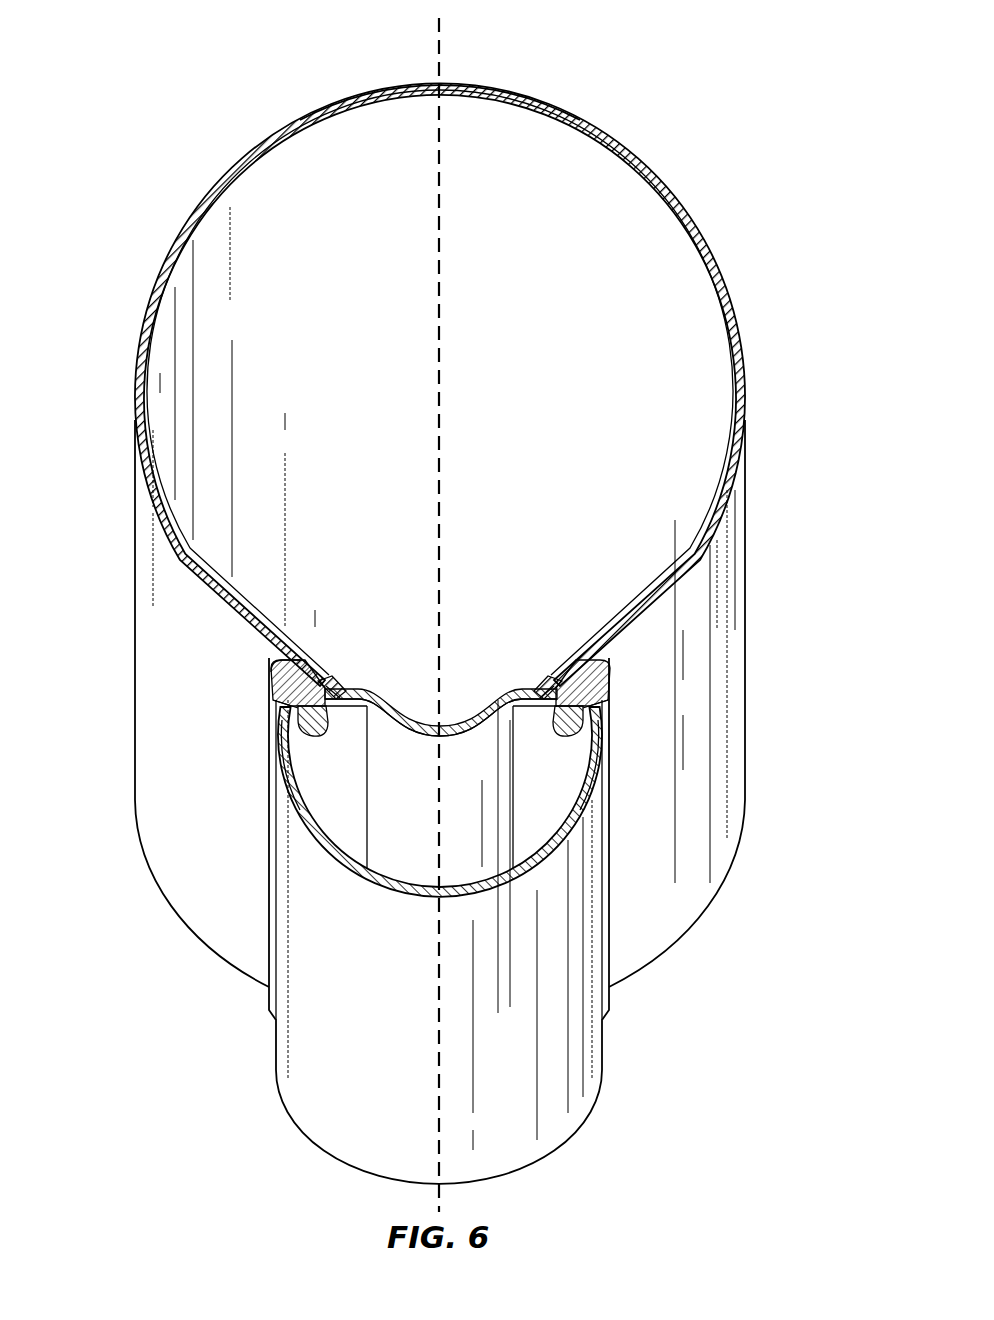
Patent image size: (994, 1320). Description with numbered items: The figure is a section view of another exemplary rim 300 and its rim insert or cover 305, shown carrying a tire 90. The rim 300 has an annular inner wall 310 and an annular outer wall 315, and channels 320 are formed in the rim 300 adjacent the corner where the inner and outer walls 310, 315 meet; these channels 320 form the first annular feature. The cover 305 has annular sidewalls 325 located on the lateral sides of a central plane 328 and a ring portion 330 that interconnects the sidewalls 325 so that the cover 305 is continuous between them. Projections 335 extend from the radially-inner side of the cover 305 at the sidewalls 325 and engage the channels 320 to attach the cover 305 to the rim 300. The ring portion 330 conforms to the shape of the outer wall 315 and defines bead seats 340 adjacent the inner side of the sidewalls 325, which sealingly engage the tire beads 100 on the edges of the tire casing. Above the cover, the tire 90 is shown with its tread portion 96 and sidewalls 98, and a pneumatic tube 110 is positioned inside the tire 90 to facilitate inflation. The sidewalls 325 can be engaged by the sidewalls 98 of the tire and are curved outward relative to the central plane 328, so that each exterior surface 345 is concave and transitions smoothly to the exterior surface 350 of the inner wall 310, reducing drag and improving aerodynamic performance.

The tire 90 is at (628, 148).
The tread portion 96 is at (525, 97).
The sidewalls 98 is at (143, 617).
The tire beads 100 is at (332, 687).
The pneumatic tube 110 is at (667, 578).
The rim 300 is at (582, 1113).
The cover 305 is at (268, 668).
The annular inner wall 310 is at (377, 882).
The annular outer wall 315 is at (410, 732).
The channels 320 is at (311, 736).
The annular sidewalls 325 is at (275, 673).
The central plane 328 is at (439, 28).
The ring portion 330 is at (472, 730).
The projections 335 is at (290, 704).
The bead seats 340 is at (337, 688).
The exterior surface 345 is at (277, 773).
The exterior surface 350 is at (283, 855).